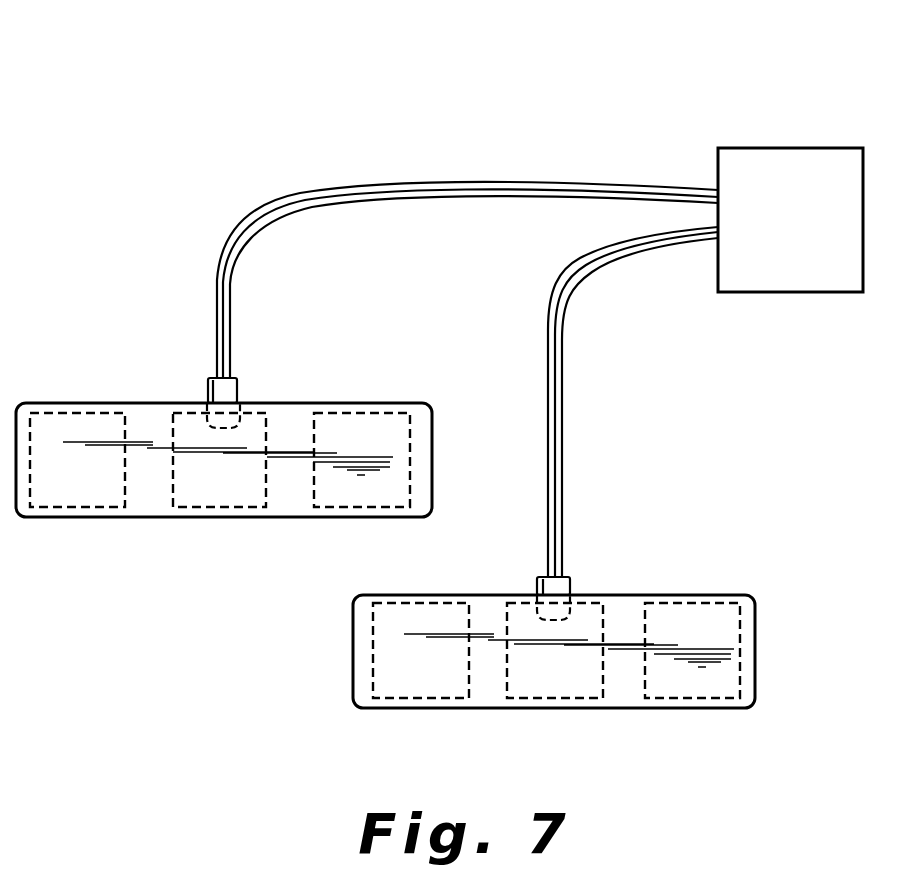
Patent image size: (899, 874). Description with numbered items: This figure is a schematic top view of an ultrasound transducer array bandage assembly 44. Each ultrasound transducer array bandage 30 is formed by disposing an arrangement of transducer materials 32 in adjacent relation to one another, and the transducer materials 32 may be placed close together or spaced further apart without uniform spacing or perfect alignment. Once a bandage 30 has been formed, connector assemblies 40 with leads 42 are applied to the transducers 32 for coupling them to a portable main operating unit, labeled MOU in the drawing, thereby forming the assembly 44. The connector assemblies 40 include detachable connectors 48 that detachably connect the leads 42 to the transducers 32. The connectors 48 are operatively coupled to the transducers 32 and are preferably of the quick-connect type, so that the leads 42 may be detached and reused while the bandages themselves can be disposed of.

The ultrasound transducer array bandage 30 is at (58, 388).
The transducer materials 32 is at (74, 490).
The connector assemblies 40 is at (195, 332).
The leads 42 is at (405, 197).
The ultrasound transducer array bandage assembly 44 is at (172, 128).
The detachable connectors 48 is at (228, 394).